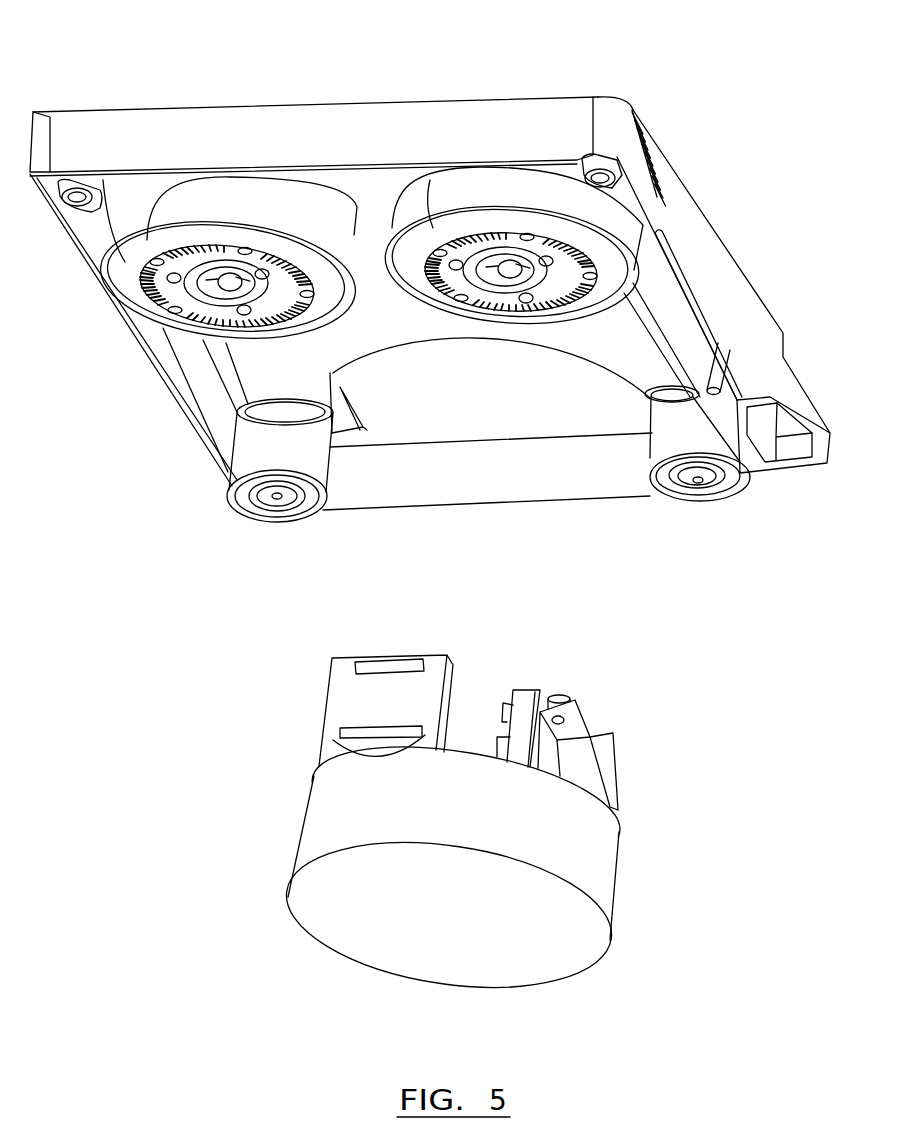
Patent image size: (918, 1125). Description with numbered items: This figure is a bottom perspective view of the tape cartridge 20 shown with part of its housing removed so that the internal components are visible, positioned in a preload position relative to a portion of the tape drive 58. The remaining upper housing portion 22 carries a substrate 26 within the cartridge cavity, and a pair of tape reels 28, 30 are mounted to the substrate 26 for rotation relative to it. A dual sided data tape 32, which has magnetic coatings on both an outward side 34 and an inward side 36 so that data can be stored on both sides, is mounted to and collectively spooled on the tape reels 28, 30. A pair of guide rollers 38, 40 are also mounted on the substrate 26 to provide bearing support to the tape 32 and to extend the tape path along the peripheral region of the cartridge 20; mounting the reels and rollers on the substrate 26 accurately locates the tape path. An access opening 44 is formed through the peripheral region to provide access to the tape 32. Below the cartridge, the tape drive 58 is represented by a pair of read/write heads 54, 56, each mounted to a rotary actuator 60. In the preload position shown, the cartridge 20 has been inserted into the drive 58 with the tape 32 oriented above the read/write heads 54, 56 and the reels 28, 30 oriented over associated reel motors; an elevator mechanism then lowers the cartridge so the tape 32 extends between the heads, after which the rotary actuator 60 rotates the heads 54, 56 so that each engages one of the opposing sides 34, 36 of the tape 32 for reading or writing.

The tape cartridge 20 is at (336, 56).
The upper housing portion 22 is at (509, 88).
The substrate 26 is at (300, 372).
The tape reel 28 is at (125, 299).
The tape reel 30 is at (613, 282).
The dual sided data tape 32 is at (598, 504).
The outward side 34 is at (677, 347).
The inward side 36 is at (525, 468).
The guide roller 38 is at (263, 510).
The guide roller 40 is at (723, 487).
The access opening 44 is at (588, 362).
The read/write head 54 is at (523, 722).
The read/write head 56 is at (330, 697).
The tape drive 58 is at (654, 838).
The rotary actuator 60 is at (612, 894).